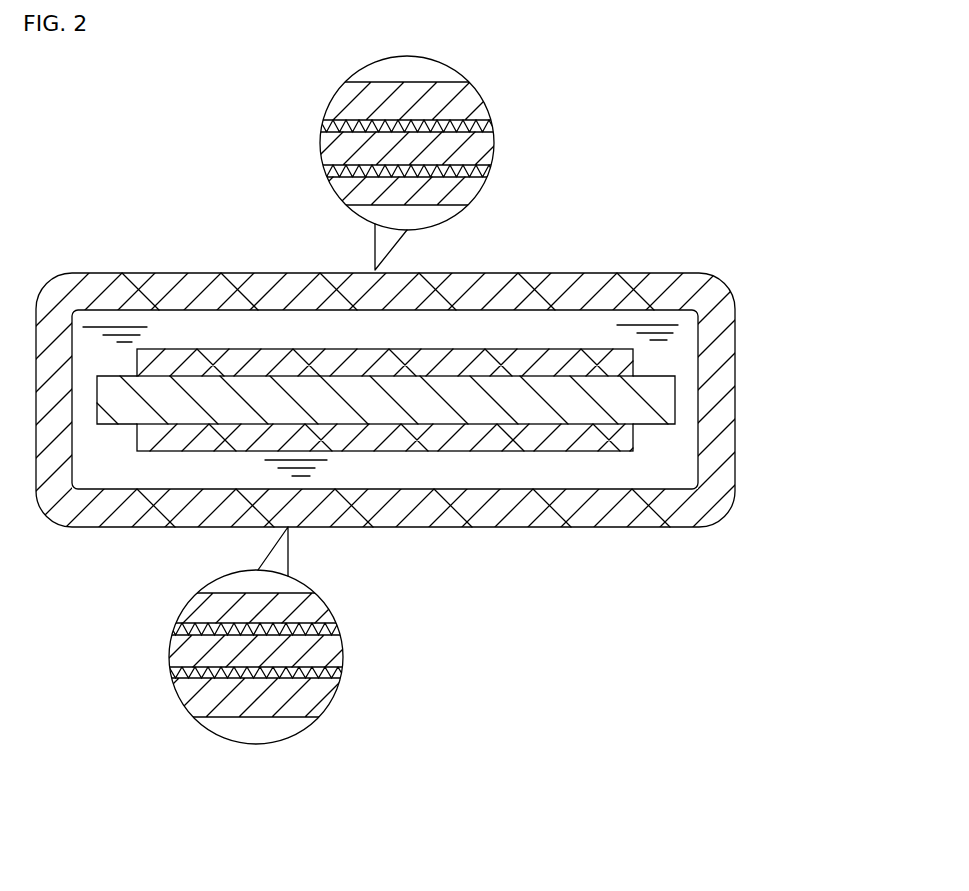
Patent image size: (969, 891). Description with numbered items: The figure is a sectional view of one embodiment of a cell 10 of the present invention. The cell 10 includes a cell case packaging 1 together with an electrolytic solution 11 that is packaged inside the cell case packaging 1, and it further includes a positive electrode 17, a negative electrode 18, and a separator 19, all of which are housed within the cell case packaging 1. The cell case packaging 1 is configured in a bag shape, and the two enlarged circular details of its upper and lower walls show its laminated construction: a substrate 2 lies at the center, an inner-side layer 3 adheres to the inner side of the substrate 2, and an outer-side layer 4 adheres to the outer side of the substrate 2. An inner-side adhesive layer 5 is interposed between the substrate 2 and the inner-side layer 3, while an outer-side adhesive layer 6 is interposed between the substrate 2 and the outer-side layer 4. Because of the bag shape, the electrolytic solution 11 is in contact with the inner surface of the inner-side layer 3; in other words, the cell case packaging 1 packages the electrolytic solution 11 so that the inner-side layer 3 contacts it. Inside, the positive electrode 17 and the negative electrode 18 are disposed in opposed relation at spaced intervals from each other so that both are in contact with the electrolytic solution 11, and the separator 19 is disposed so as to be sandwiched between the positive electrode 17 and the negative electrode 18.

The cell case packaging 1 is at (721, 272).
The substrate 2 is at (497, 142).
The inner-side layer 3 is at (485, 192).
The outer-side layer 4 is at (482, 90).
The inner-side adhesive layer 5 is at (492, 167).
The outer-side adhesive layer 6 is at (493, 120).
The cell 10 is at (480, 593).
The electrolytic solution 11 is at (658, 468).
The positive electrode 17 is at (635, 355).
The negative electrode 18 is at (635, 430).
The separator 19 is at (675, 398).